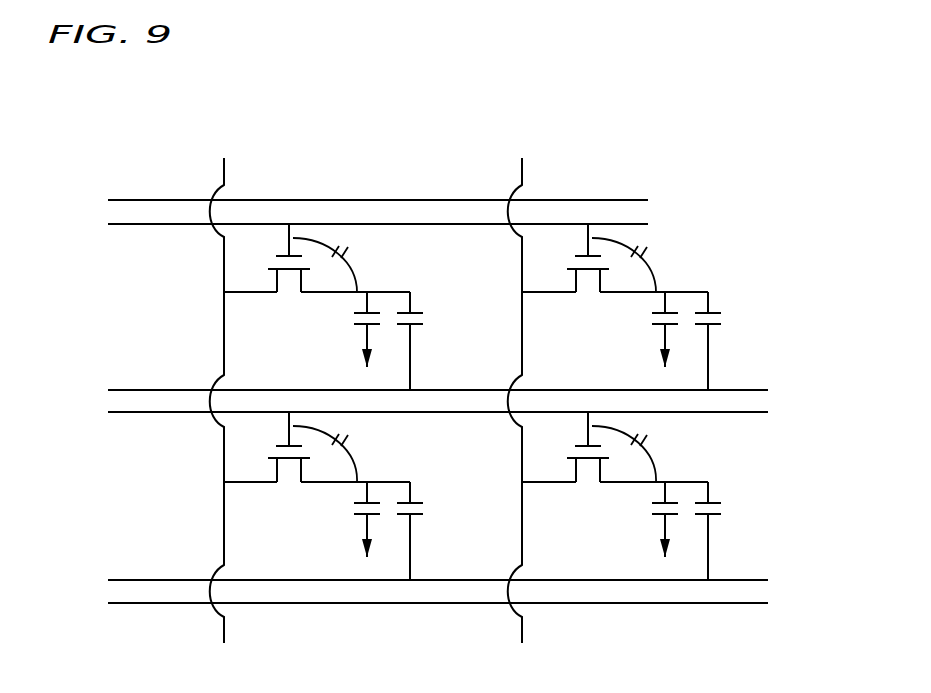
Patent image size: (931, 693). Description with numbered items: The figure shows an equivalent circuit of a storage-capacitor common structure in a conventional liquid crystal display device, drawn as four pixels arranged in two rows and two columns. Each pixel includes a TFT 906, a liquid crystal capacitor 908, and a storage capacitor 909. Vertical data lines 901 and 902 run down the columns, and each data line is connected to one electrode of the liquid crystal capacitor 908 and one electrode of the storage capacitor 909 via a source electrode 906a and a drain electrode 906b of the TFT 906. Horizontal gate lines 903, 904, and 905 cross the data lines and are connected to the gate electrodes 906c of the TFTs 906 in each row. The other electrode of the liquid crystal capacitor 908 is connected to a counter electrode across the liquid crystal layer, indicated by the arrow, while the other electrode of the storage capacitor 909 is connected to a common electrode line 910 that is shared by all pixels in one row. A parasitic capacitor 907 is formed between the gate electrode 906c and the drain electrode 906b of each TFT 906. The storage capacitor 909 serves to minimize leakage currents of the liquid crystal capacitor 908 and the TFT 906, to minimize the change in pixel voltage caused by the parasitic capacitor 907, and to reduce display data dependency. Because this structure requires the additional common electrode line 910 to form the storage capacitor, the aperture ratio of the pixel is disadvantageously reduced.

The data line 901 is at (225, 168).
The data line 902 is at (523, 168).
The gate line 903 is at (172, 225).
The gate line 904 is at (163, 416).
The gate line 905 is at (162, 607).
The TFT 906 is at (262, 268).
The source electrode 906a is at (242, 292).
The drain electrode 906b is at (325, 293).
The gate electrode 906c is at (290, 233).
The parasitic capacitor 907 is at (343, 240).
The liquid crystal capacitor 908 is at (353, 337).
The storage capacitor 909 is at (430, 312).
The common electrode line 910 is at (162, 200).